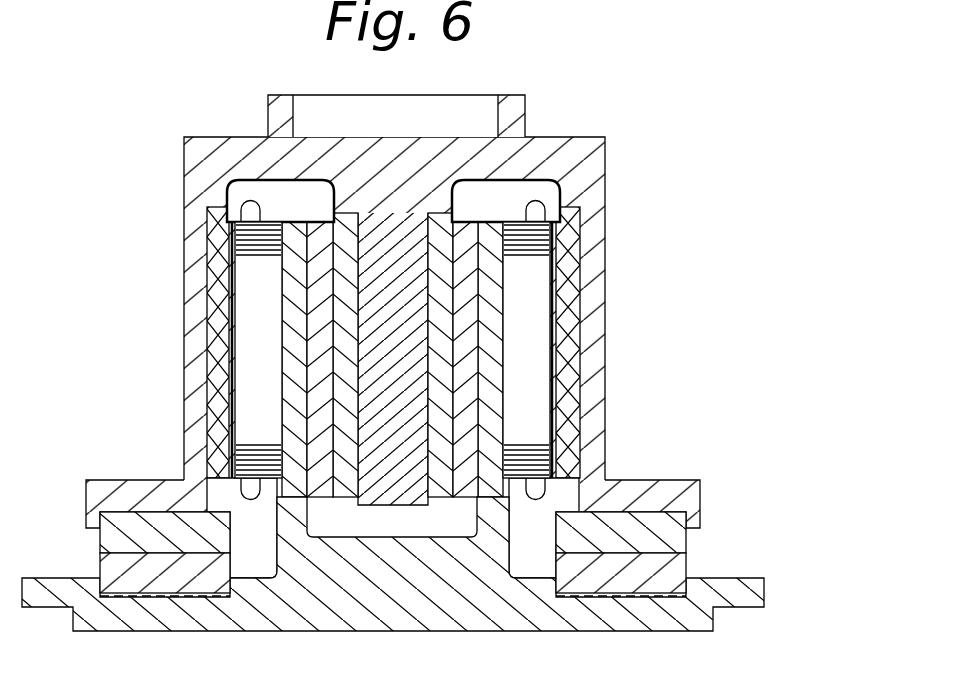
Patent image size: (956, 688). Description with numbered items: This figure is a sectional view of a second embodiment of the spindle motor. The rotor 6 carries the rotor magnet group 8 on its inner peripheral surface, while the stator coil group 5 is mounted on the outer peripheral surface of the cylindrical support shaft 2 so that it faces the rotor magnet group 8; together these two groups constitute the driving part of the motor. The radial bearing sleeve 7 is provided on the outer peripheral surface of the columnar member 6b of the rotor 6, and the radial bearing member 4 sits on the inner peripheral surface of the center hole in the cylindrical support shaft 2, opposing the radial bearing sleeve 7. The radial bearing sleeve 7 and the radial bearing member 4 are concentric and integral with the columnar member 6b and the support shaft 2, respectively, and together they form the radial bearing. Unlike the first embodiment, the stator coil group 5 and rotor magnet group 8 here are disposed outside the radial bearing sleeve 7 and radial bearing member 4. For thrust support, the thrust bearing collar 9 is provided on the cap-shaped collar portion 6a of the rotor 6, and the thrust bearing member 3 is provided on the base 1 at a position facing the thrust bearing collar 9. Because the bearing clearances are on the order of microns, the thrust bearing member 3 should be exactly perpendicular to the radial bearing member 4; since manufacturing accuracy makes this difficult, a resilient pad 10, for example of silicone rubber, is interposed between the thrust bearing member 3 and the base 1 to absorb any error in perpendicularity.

The base 1 is at (662, 627).
The cylindrical support shaft 2 is at (492, 360).
The thrust bearing member 3 is at (107, 568).
The radial bearing member 4 is at (468, 332).
The stator coil group 5 is at (537, 285).
The rotor 6 is at (588, 146).
The cap-shaped collar portion 6a is at (110, 483).
The columnar member 6b is at (405, 410).
The radial bearing sleeve 7 is at (555, 248).
The rotor magnet group 8 is at (572, 218).
The thrust bearing collar 9 is at (103, 535).
The resilient pad 10 is at (110, 597).